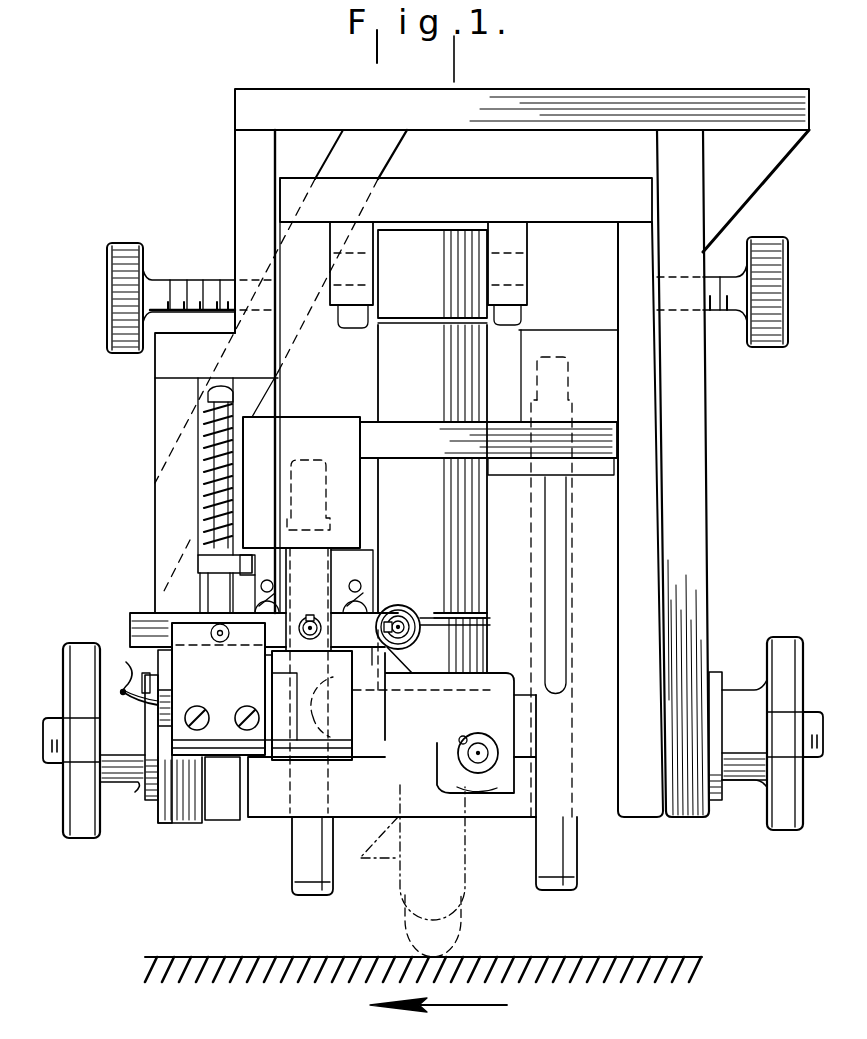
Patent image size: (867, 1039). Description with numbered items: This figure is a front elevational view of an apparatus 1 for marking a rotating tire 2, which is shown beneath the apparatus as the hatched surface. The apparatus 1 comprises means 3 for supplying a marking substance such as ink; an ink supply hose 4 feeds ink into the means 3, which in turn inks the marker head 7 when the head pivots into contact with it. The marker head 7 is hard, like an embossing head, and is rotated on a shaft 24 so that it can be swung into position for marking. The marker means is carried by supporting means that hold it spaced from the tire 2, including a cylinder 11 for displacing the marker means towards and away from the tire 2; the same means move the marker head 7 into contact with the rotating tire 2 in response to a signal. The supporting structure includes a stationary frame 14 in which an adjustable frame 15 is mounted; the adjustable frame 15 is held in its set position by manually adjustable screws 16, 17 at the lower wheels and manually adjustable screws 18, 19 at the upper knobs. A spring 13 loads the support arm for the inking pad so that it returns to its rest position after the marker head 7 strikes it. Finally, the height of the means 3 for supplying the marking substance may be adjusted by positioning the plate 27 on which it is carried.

The apparatus 1 is at (666, 77).
The tire 2 is at (625, 955).
The means for supplying a marking substance 3 is at (280, 733).
The ink supply hose 4 is at (140, 689).
The marker head 7 is at (353, 745).
The cylinder 11 is at (484, 382).
The spring 13 is at (205, 477).
The stationary frame 14 is at (708, 513).
The adjustable frame 15 is at (652, 562).
The manually adjustable screw 16 is at (790, 832).
The manually adjustable screw 17 is at (90, 840).
The manually adjustable screw 18 is at (767, 349).
The manually adjustable screw 19 is at (128, 250).
The shaft 24 is at (487, 772).
The plate 27 is at (373, 550).